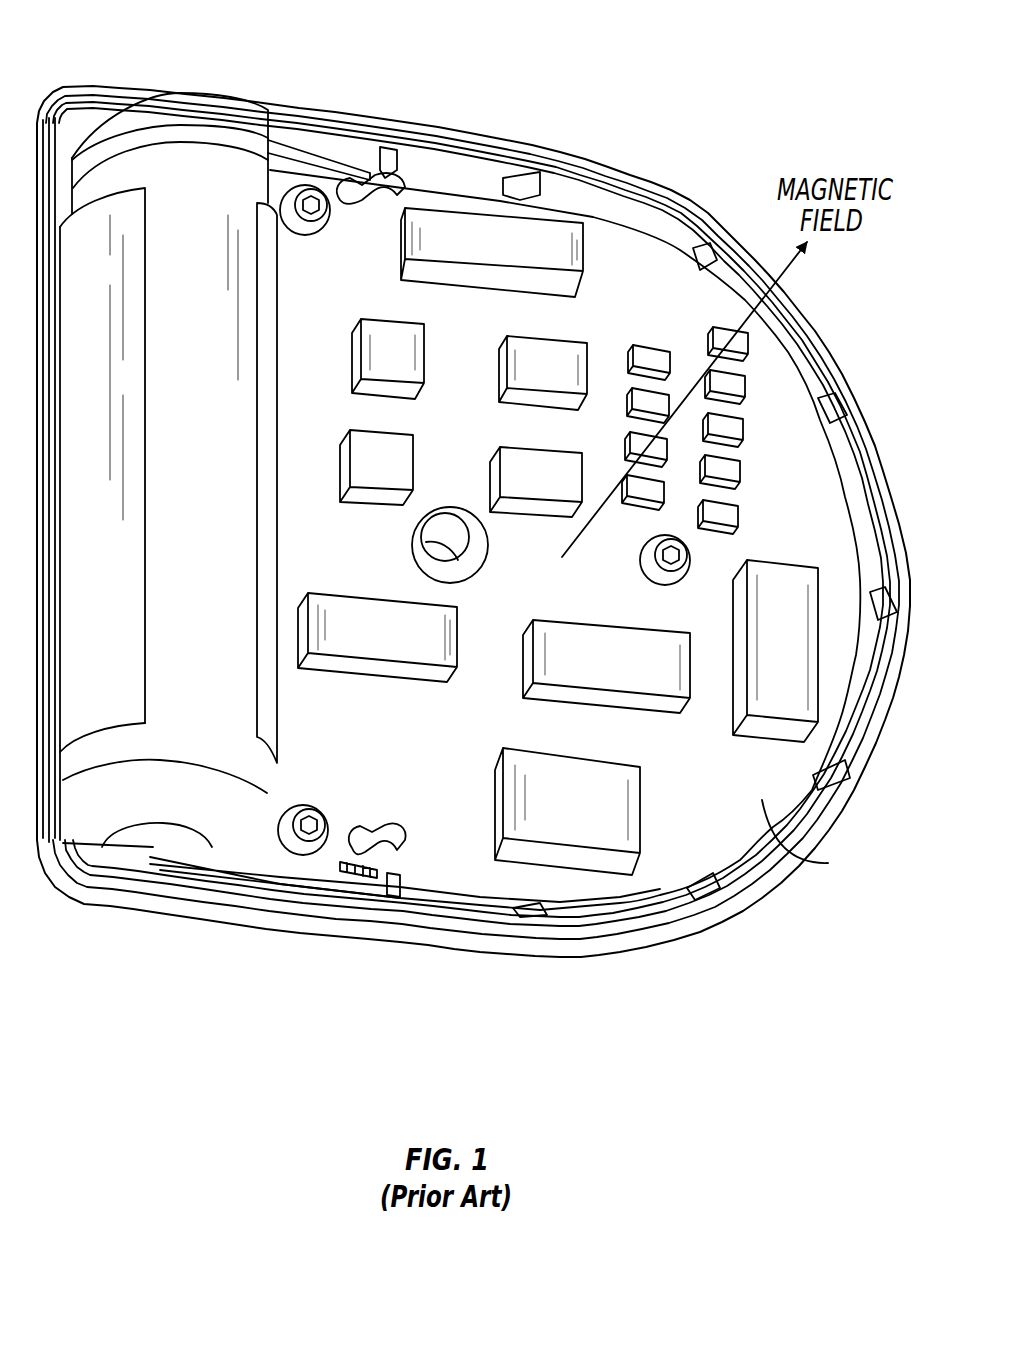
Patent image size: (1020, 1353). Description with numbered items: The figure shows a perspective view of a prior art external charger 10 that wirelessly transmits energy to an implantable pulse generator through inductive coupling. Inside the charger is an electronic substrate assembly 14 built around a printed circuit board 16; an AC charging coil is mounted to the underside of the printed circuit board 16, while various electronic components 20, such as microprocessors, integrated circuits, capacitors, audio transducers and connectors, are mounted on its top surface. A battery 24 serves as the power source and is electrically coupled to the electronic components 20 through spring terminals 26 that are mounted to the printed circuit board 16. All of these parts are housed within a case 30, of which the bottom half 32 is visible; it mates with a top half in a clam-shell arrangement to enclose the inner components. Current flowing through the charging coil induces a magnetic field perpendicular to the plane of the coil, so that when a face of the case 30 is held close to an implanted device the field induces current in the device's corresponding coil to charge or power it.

The external charger 10 is at (688, 90).
The electronic substrate assembly 14 is at (633, 275).
The printed circuit board 16 is at (810, 841).
The electronic components 20 is at (387, 327).
The battery 24 is at (143, 108).
The spring terminals 26 is at (283, 155).
The case 30 is at (113, 912).
The bottom half 32 is at (590, 948).